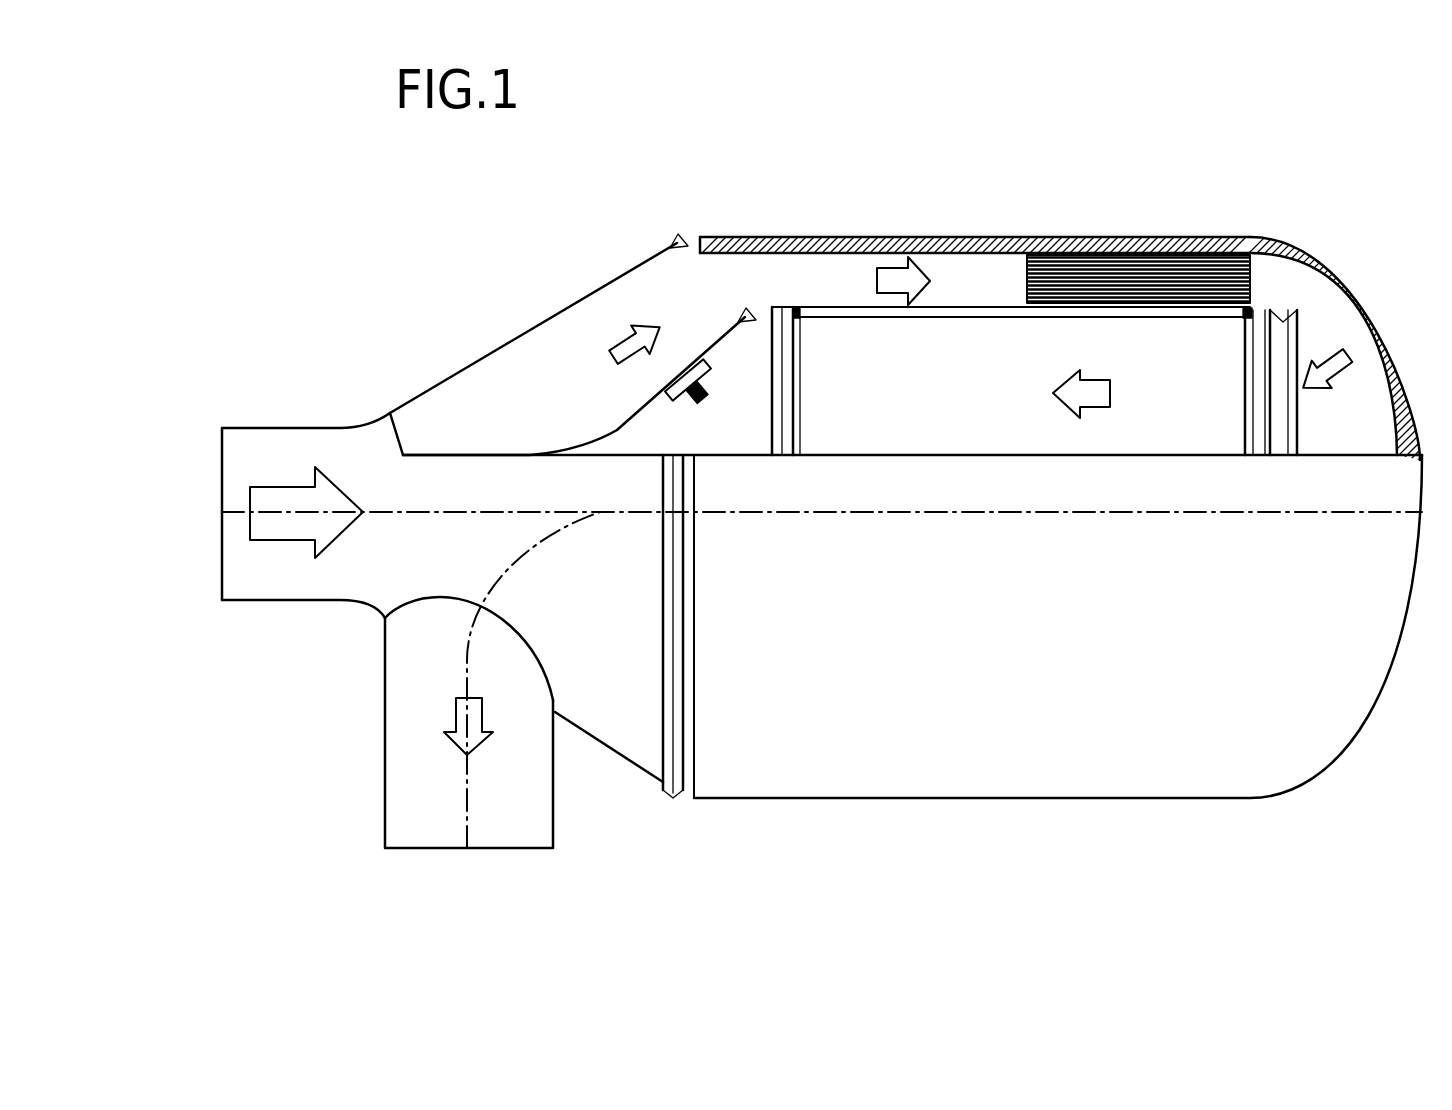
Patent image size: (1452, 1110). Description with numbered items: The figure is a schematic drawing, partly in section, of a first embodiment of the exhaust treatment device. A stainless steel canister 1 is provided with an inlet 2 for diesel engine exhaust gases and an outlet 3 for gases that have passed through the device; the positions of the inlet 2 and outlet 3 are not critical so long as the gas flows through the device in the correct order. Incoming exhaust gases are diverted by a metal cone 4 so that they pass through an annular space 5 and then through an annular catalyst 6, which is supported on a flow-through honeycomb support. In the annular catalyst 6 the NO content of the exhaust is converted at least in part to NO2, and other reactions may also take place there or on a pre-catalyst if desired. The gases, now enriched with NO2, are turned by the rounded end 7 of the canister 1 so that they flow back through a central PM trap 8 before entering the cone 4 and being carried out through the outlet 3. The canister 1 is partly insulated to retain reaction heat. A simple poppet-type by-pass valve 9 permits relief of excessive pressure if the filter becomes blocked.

The stainless steel canister 1 is at (543, 327).
The inlet 2 is at (220, 462).
The outlet 3 is at (383, 688).
The metal cone 4 is at (630, 417).
The annular space 5 is at (838, 278).
The annular catalyst 6 is at (1100, 260).
The rounded end 7 is at (1395, 355).
The central PM trap 8 is at (1175, 410).
The poppet-type by-pass valve 9 is at (683, 412).